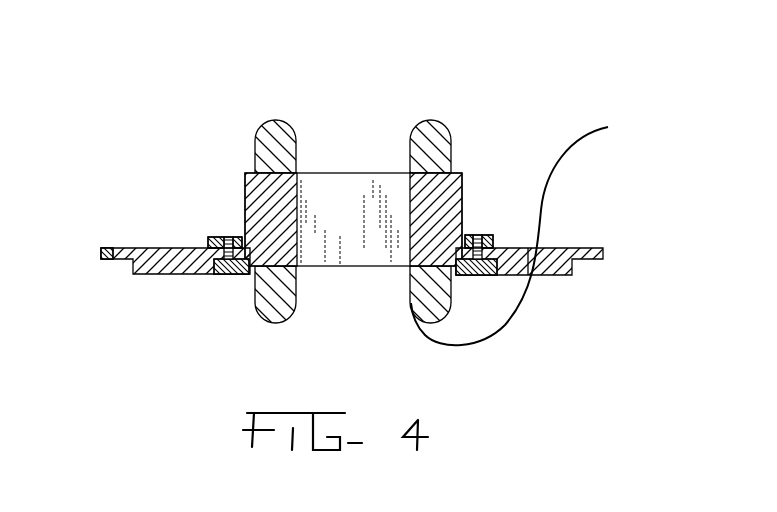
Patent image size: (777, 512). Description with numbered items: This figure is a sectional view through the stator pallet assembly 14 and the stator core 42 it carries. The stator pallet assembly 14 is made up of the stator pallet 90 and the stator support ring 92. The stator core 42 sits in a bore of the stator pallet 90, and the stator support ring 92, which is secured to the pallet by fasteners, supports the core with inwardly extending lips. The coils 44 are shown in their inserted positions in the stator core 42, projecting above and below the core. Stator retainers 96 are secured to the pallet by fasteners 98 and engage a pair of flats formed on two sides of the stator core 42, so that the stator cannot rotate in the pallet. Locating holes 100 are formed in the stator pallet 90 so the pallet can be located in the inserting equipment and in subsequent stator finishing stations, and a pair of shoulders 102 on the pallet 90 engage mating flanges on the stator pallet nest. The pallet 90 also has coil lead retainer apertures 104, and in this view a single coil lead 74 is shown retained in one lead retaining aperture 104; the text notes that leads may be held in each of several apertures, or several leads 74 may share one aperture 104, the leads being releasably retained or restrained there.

The stator pallet assembly 14 is at (551, 113).
The stator core 42 is at (450, 197).
The coils 44 is at (432, 127).
The coil lead 74 is at (503, 328).
The stator pallet 90 is at (153, 260).
The stator support ring 92 is at (243, 273).
The stator retainer 96 is at (490, 235).
The fastener 98 is at (228, 237).
The locating hole 100 is at (114, 248).
The shoulder 102 is at (587, 261).
The coil lead retainer aperture 104 is at (541, 248).